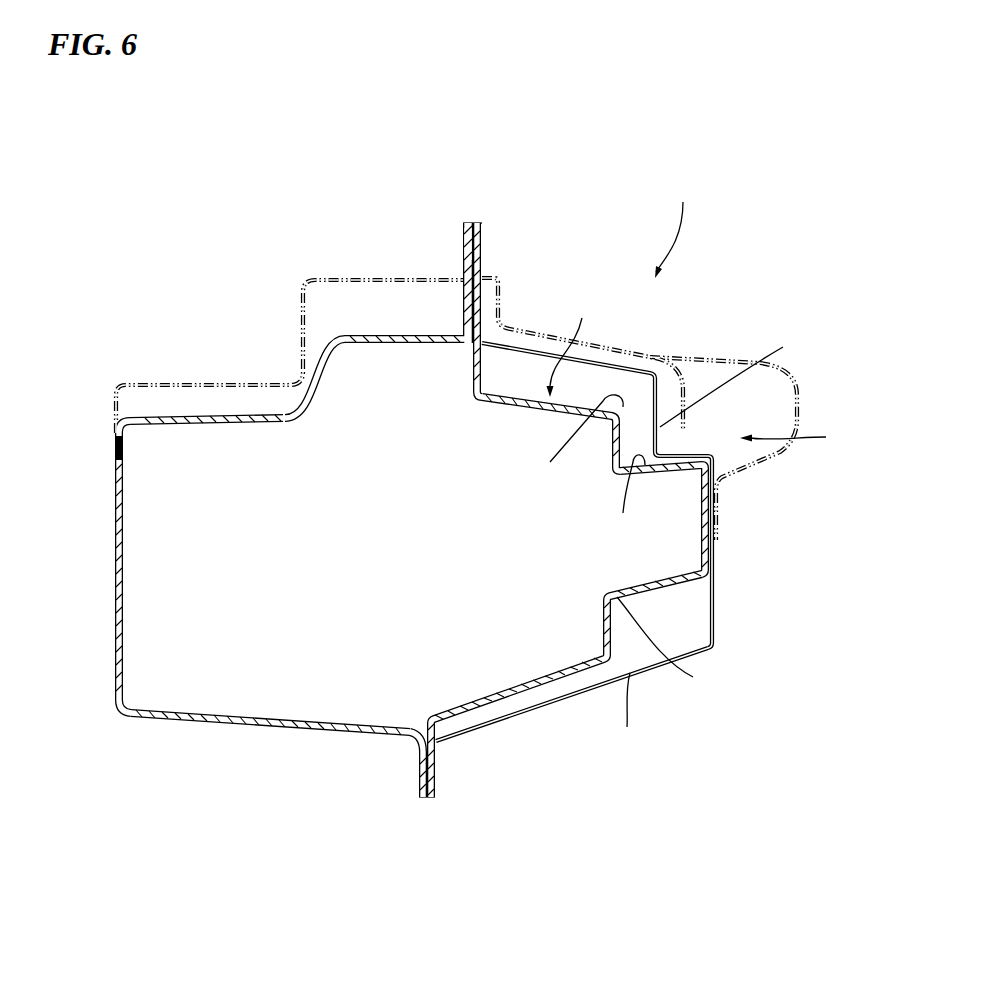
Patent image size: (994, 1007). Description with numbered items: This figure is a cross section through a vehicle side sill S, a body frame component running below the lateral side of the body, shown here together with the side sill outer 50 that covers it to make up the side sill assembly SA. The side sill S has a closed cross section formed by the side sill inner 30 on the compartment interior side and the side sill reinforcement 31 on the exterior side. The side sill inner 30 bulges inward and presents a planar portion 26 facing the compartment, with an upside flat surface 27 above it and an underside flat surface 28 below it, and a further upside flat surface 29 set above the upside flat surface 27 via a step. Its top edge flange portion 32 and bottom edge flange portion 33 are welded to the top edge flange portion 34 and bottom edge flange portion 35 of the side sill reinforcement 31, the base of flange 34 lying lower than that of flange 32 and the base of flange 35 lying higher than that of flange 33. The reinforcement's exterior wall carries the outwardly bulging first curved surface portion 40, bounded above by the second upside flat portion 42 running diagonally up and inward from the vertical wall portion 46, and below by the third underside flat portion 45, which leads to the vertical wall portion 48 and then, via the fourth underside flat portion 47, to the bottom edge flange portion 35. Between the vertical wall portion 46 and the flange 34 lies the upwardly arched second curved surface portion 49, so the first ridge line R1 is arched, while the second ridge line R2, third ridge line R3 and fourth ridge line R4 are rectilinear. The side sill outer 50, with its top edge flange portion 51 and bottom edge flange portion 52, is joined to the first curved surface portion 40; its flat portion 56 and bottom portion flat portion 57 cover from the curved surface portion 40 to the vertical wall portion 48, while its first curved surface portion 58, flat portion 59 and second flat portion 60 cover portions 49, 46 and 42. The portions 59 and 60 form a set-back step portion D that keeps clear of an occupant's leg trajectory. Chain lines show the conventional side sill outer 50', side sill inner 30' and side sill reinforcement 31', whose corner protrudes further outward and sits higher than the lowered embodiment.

The planar portion 26 is at (116, 535).
The upside flat surface 27 is at (207, 418).
The underside flat surface 28 is at (243, 728).
The upside flat surface 29 is at (365, 336).
The side sill inner 30 is at (68, 421).
The conventional side sill inner 30' is at (289, 295).
The side sill reinforcement 31 is at (621, 387).
The conventional side sill reinforcement 31' is at (604, 339).
The top edge flange portion 32 is at (463, 238).
The bottom edge flange portion 33 is at (420, 782).
The top edge flange portion 34 is at (472, 222).
The bottom edge flange portion 35 is at (428, 799).
The first curved surface portion 40 is at (708, 543).
The second upside flat portion 42 is at (673, 470).
The third underside flat portion 45 is at (710, 610).
The vertical wall portion 46 is at (652, 415).
The fourth underside flat portion 47 is at (537, 683).
The vertical wall portion 48 is at (617, 630).
The second curved surface portion 49 is at (513, 393).
The side sill outer 50 is at (762, 507).
The conventional side sill outer 50' is at (733, 391).
The top edge flange portion 51 is at (482, 240).
The bottom edge flange portion 52 is at (435, 782).
The flat portion 56 is at (713, 587).
The bottom portion flat portion 57 is at (510, 717).
The first curved surface portion 58 is at (590, 362).
The flat portion 59 is at (737, 378).
The second flat portion 60 is at (703, 455).
The side sill S is at (569, 341).
The side sill assembly SA is at (676, 224).
The step portion D is at (792, 435).
The first ridge line R1 is at (575, 444).
The second ridge line R2 is at (624, 501).
The third ridge line R3 is at (670, 649).
The fourth ridge line R4 is at (628, 716).